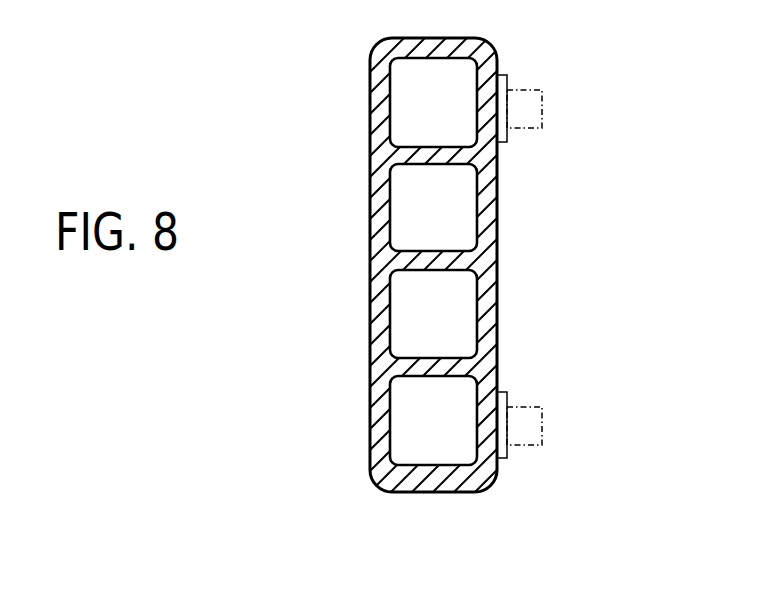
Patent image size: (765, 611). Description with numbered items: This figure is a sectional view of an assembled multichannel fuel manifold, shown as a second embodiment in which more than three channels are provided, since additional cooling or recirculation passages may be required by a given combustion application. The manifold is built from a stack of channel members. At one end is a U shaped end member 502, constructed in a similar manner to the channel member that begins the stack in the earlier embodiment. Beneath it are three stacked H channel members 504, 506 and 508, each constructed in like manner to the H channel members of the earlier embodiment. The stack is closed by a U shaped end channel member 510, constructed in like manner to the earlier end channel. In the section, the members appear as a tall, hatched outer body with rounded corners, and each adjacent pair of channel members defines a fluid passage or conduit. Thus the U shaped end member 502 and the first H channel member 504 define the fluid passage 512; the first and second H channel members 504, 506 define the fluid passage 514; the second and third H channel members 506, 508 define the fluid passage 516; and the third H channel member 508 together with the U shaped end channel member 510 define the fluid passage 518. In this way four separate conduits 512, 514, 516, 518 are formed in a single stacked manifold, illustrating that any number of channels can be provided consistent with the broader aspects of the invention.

The U shaped end member 502 is at (380, 48).
The H channel member 504 is at (370, 113).
The H channel member 506 is at (370, 210).
The H channel member 508 is at (370, 312).
The U shaped end channel member 510 is at (370, 433).
The fluid passage 512 is at (443, 118).
The fluid passage 514 is at (443, 225).
The fluid passage 516 is at (443, 330).
The fluid passage 518 is at (443, 435).